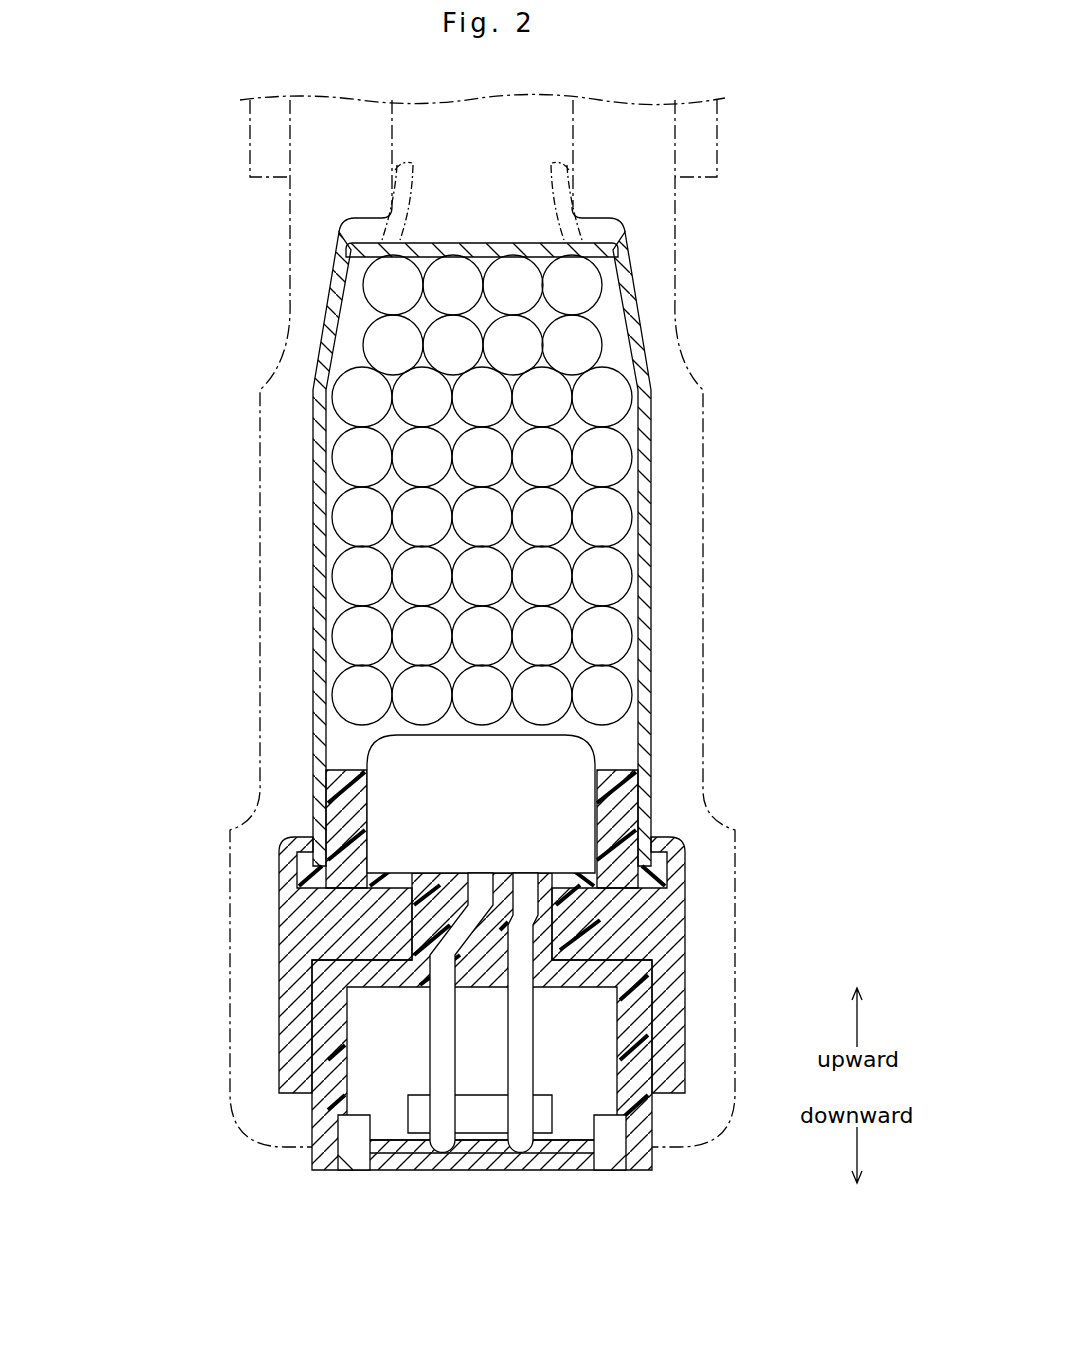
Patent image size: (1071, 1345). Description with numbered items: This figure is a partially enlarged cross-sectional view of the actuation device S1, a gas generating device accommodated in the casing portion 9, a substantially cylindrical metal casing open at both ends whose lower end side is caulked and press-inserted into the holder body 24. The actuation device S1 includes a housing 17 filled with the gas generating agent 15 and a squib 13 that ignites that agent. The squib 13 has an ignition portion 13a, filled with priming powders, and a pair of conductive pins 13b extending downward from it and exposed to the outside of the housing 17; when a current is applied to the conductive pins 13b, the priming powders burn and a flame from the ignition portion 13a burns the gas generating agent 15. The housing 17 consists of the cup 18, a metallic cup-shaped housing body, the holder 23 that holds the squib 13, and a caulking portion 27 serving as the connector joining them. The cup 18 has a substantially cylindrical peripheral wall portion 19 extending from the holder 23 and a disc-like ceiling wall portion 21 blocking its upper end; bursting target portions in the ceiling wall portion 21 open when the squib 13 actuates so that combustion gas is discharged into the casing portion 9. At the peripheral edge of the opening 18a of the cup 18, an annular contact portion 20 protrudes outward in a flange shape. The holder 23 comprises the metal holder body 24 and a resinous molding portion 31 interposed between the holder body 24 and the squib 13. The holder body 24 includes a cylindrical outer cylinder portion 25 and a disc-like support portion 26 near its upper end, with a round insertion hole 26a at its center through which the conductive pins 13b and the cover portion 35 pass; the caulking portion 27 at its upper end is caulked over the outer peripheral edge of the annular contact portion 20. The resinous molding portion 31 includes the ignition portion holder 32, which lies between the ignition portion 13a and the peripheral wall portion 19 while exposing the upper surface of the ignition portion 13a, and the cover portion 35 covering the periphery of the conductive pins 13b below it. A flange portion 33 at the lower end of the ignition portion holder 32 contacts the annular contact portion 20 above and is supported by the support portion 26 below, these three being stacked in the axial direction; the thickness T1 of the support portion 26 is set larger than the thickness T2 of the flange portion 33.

The casing portion 9 is at (677, 292).
The squib 13 is at (568, 969).
The ignition portion 13a is at (577, 770).
The conductive pins 13b is at (520, 1142).
The gas generating agent 15 is at (612, 458).
The housing 17 is at (178, 648).
The cup 18 is at (476, 494).
The opening 18a is at (613, 853).
The peripheral wall portion 19 is at (645, 568).
The annular contact portion 20 is at (687, 853).
The ceiling wall portion 21 is at (478, 242).
The holder 23 is at (475, 959).
The holder body 24 is at (251, 1034).
The outer cylinder portion 25 is at (278, 1002).
The support portion 26 is at (556, 1038).
The insertion hole 26a is at (535, 933).
The caulking portion 27 is at (690, 838).
The resinous molding portion 31 is at (667, 1171).
The ignition portion holder 32 is at (625, 788).
The flange portion 33 is at (672, 893).
The cover portion 35 is at (635, 1070).
The actuation device S1 is at (690, 641).
The thickness of the support portion T1 is at (207, 938).
The thickness of the flange portion T2 is at (764, 902).